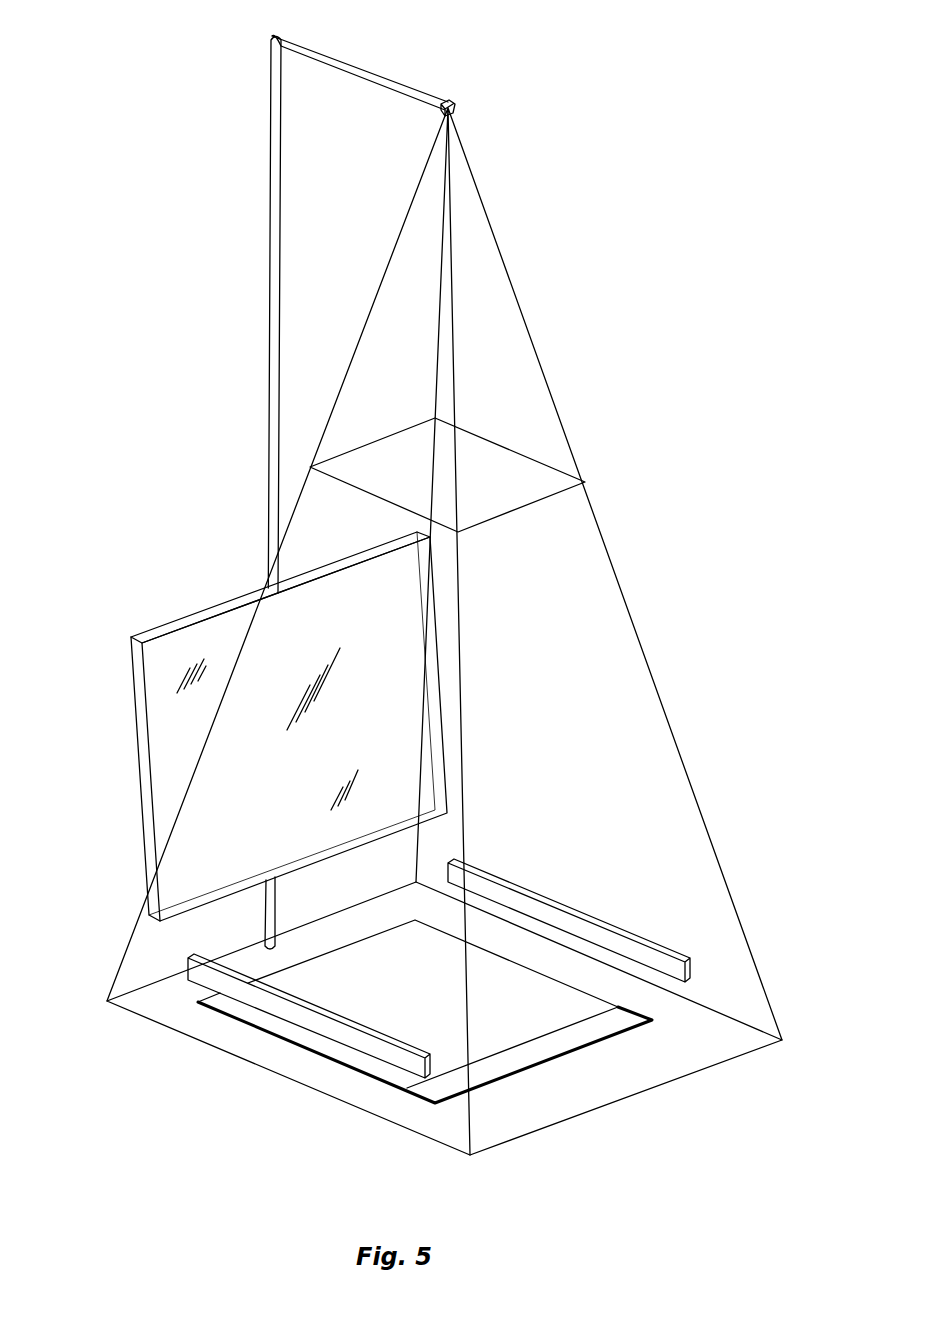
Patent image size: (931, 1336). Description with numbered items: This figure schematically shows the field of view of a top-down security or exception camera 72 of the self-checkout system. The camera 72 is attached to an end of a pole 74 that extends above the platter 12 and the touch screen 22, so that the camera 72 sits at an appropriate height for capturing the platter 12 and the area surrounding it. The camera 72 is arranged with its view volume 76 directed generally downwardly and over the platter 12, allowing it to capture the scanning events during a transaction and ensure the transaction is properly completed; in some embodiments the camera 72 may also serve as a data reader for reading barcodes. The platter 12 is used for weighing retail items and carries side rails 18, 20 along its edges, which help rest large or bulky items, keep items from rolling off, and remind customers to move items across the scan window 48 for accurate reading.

The weigh platter 12 is at (347, 968).
The side rail 18 is at (271, 1004).
The side rail 20 is at (540, 905).
The touch screen 22 is at (174, 738).
The scan window 48 is at (526, 1057).
The camera 72 is at (456, 103).
The pole 74 is at (388, 76).
The view volume 76 is at (456, 326).